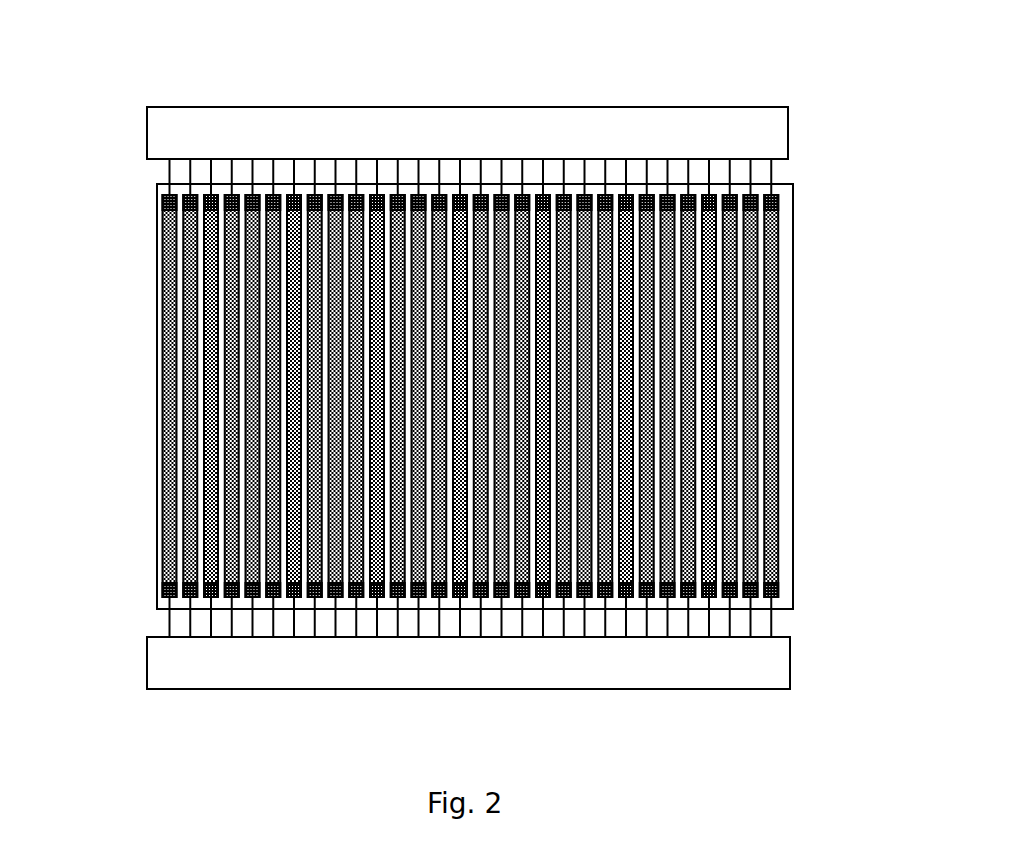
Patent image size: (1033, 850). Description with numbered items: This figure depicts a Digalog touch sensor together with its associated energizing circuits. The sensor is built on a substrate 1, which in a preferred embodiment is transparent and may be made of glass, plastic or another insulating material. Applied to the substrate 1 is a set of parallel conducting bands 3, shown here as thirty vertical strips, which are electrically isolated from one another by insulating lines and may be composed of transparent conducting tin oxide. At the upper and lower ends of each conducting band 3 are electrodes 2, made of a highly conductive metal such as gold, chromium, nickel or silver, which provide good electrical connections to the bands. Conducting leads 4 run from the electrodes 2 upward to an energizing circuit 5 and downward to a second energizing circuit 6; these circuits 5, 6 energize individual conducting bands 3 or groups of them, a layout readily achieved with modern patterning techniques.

The substrate 1 is at (157, 188).
The electrodes 2 is at (163, 206).
The conducting bands 3 is at (167, 390).
The lead lines 4 is at (775, 173).
The energizing circuit 5 is at (728, 121).
The energizing circuit 6 is at (753, 664).